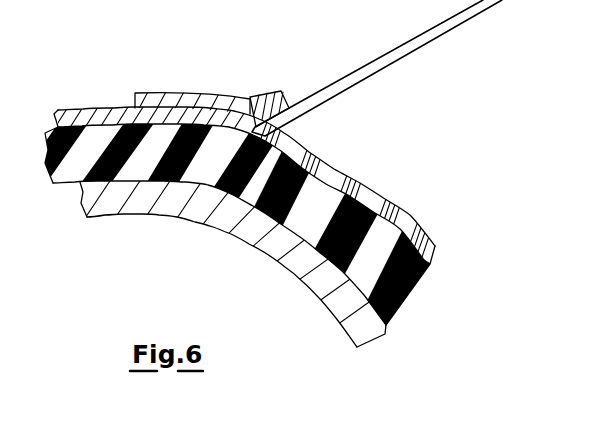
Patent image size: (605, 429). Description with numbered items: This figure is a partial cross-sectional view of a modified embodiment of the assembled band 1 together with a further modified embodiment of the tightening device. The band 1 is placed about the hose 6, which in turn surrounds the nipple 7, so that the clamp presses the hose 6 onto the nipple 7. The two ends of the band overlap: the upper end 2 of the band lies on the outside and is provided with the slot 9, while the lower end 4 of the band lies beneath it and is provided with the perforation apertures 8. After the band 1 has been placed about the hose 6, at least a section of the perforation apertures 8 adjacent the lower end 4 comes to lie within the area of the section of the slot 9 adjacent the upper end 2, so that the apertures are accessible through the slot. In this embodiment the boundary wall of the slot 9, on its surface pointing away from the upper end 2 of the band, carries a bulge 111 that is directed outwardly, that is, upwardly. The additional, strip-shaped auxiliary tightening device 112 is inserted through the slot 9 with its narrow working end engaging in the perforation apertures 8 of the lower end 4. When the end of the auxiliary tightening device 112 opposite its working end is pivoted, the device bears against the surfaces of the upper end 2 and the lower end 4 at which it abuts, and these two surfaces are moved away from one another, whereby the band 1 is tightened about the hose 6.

The band 1 is at (130, 106).
The upper end of the band 2 is at (201, 100).
The bulge 111 is at (288, 72).
The auxiliary tightening device 112 is at (458, 22).
The slot 9 is at (345, 168).
The perforation apertures 8 is at (406, 236).
The lower end of the band 4 is at (430, 267).
The hose 6 is at (371, 271).
The nipple 7 is at (364, 335).